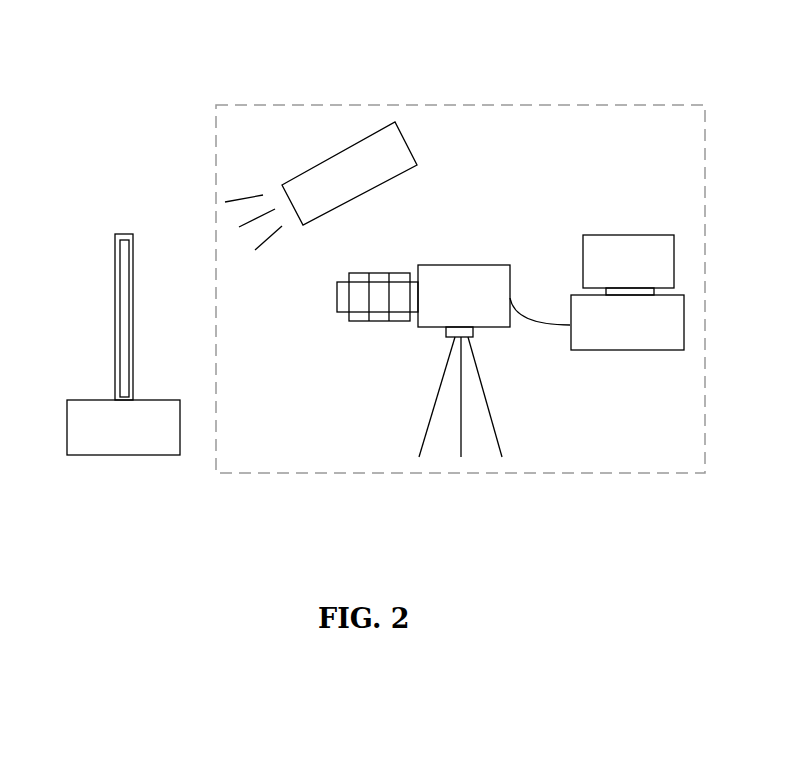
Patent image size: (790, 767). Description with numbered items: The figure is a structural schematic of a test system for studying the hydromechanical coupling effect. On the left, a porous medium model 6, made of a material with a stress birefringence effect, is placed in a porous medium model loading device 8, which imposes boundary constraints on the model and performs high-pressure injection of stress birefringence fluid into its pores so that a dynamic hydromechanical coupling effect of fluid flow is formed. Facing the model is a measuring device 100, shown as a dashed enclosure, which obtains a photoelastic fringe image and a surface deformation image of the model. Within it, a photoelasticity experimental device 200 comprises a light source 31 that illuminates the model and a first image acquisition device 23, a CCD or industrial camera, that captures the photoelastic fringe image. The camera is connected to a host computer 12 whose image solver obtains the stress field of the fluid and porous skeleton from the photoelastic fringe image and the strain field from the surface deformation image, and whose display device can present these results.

The measuring device 100 is at (215, 165).
The photoelasticity experimental device 200 is at (349, 140).
The light source 31 is at (401, 126).
The first image acquisition device 23 is at (415, 330).
The host computer 12 is at (626, 231).
The porous medium model 6 is at (114, 323).
The porous medium model loading device 8 is at (133, 432).